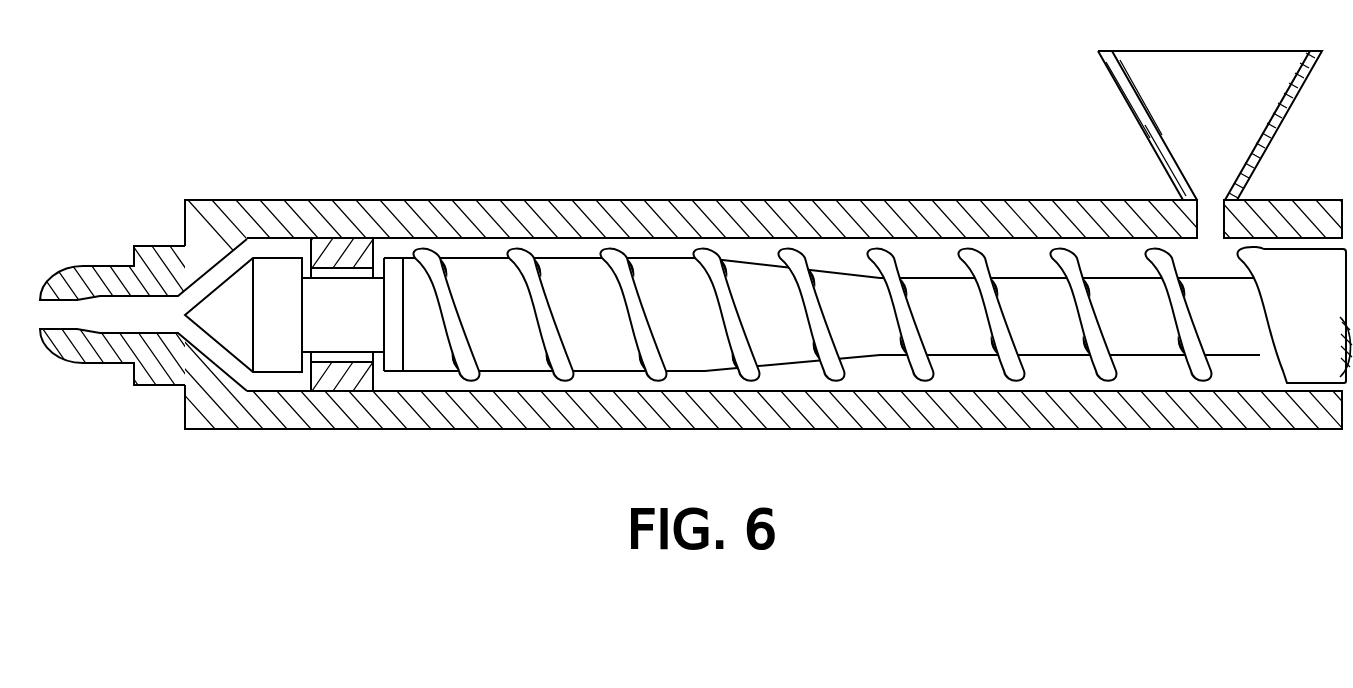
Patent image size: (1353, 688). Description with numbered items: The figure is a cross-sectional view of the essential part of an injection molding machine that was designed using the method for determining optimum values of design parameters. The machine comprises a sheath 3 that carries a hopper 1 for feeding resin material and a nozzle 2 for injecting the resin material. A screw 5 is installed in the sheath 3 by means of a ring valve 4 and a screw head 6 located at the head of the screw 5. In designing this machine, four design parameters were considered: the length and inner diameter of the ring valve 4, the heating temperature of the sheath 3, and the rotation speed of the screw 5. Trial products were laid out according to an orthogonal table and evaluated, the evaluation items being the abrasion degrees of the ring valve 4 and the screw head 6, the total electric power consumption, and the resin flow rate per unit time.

The hopper 1 is at (1138, 112).
The nozzle 2 is at (103, 276).
The sheath 3 is at (660, 217).
The ring valve 4 is at (338, 252).
The screw 5 is at (758, 288).
The screw head 6 is at (278, 282).